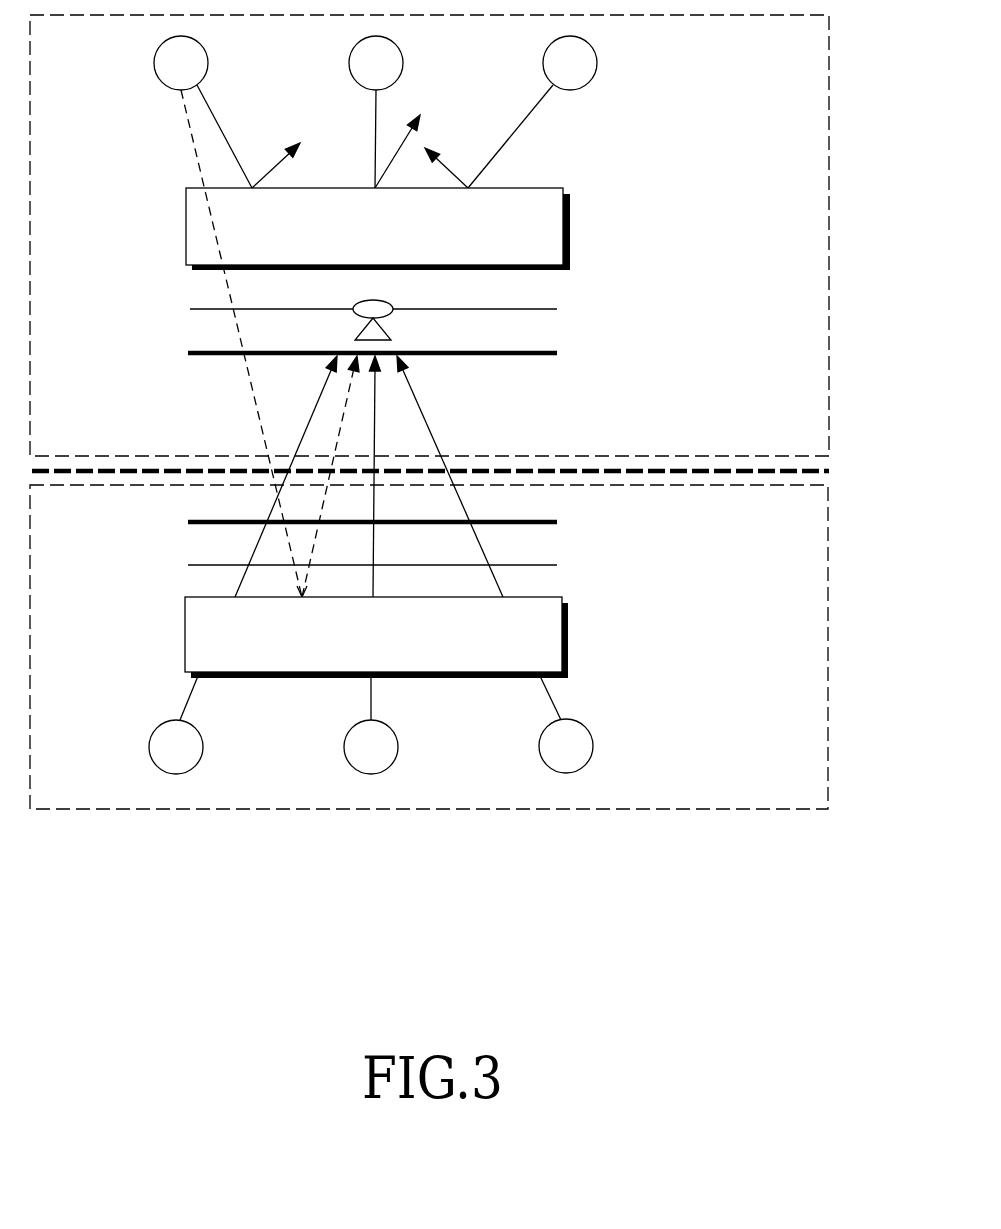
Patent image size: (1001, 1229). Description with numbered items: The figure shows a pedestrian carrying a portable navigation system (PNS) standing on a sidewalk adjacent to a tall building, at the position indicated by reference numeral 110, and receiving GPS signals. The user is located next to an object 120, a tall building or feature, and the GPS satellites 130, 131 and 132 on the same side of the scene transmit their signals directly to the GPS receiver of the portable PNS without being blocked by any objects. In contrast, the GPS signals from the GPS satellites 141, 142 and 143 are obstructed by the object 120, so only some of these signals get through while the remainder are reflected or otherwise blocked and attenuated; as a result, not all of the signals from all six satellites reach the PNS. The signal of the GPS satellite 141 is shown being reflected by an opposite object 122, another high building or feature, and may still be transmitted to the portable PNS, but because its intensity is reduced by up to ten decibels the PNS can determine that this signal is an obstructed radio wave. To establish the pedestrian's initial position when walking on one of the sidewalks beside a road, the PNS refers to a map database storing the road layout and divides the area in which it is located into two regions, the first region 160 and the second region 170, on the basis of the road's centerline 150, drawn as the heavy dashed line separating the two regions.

The position of the user carrying a PNS 110 is at (385, 330).
The object 120 is at (570, 231).
The opposite object 122 is at (568, 638).
The GPS satellite 130 is at (203, 747).
The GPS satellite 131 is at (398, 747).
The GPS satellite 132 is at (593, 746).
The GPS satellite 141 is at (208, 63).
The GPS satellite 142 is at (403, 63).
The GPS satellite 143 is at (597, 63).
The road's centerline 150 is at (694, 468).
The region-1 160 is at (828, 652).
The region-2 170 is at (829, 236).